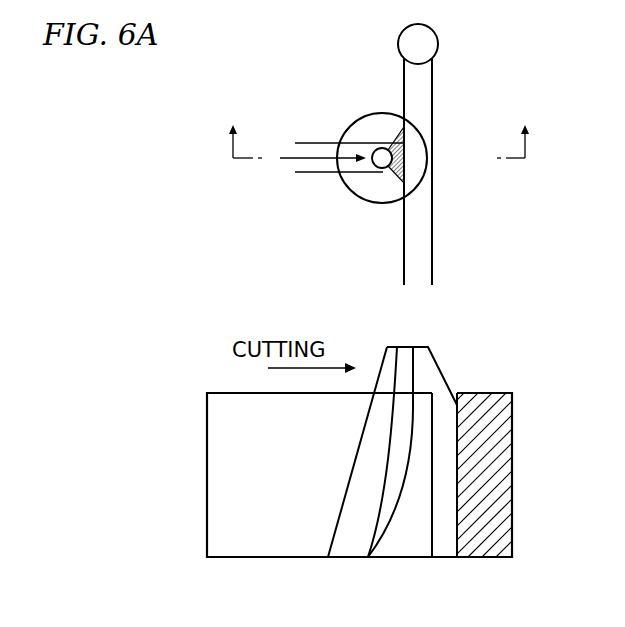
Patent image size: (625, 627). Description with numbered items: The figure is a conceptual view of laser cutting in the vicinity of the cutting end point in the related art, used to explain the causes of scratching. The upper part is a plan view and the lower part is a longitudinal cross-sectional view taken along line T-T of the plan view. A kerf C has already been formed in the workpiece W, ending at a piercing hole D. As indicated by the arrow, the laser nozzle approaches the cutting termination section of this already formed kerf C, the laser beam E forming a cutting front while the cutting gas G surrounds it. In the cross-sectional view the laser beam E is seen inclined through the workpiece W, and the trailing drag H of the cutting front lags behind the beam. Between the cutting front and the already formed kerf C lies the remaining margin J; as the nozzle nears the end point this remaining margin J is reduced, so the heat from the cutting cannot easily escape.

The piercing hole D is at (438, 42).
The kerf C is at (328, 145).
The laser beam E is at (378, 167).
The cutting gas G is at (409, 192).
The drag H is at (403, 487).
The remaining margin J is at (413, 540).
The workpiece W is at (487, 540).
The line T- T is at (377, 142).